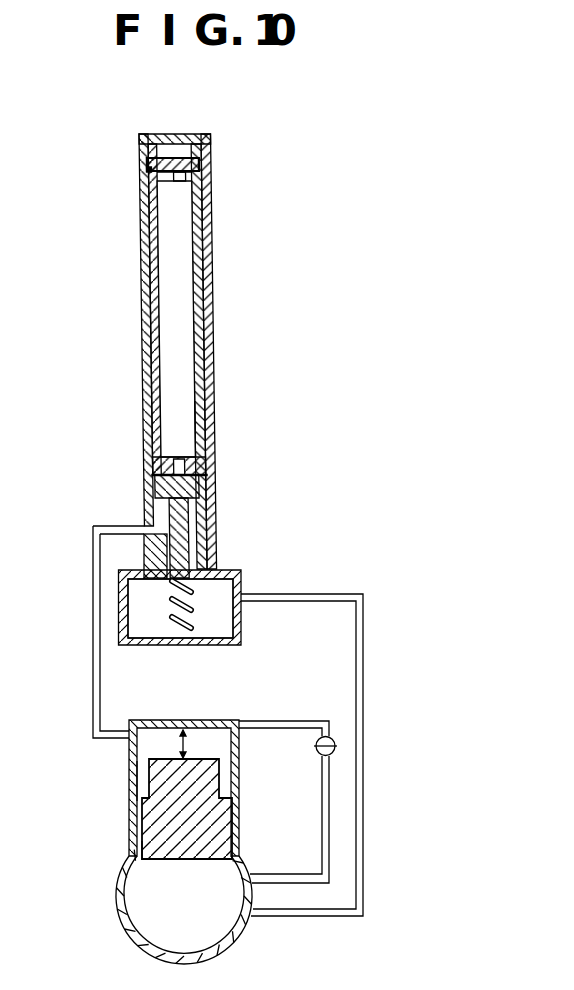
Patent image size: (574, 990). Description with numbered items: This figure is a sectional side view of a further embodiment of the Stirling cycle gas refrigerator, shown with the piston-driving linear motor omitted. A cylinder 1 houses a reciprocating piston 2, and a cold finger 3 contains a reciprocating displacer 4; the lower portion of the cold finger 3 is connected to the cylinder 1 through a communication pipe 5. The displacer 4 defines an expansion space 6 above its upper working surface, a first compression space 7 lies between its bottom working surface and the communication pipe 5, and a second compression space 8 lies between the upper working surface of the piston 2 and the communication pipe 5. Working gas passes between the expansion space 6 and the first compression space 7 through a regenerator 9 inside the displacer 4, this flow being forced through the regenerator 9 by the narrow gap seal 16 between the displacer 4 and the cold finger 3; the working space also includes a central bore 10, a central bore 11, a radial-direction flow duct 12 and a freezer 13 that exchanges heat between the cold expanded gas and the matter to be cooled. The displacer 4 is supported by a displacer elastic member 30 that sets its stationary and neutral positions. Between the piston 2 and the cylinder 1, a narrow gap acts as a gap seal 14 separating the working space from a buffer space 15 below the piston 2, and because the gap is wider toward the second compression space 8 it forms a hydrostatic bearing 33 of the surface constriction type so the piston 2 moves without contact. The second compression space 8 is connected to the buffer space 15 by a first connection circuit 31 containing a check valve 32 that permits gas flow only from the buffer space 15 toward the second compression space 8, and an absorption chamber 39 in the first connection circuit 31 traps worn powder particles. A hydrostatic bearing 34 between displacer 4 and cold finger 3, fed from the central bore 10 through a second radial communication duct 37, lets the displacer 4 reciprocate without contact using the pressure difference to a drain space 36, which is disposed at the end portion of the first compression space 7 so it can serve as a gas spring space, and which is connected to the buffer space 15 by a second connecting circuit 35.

The cylinder 1 is at (128, 818).
The piston 2 is at (148, 808).
The cold finger 3 is at (213, 287).
The displacer 4 is at (199, 371).
The communication pipe 5 is at (92, 669).
The expansion space 6 is at (206, 143).
The first compression space 7 is at (160, 503).
The second compression space 8 is at (149, 730).
The regenerator 9 is at (172, 373).
The central bore 10 is at (181, 466).
The central bore 11 is at (187, 178).
The radial-direction flow duct 12 is at (147, 168).
The freezer 13 is at (200, 165).
The gap seal 14 is at (145, 845).
The buffer space 15 is at (140, 908).
The gap seal 16 is at (209, 432).
The displacer elastic member 30 is at (197, 636).
The first connection circuit 31 is at (322, 840).
The check valve 32 is at (314, 742).
The hydrostatic bearing 33 is at (143, 772).
The hydrostatic bearing 34 is at (145, 548).
The second connecting circuit 35 is at (330, 915).
The drain space 36 is at (142, 600).
The second radial communication duct 37 is at (214, 484).
The absorption chamber 39 is at (180, 608).